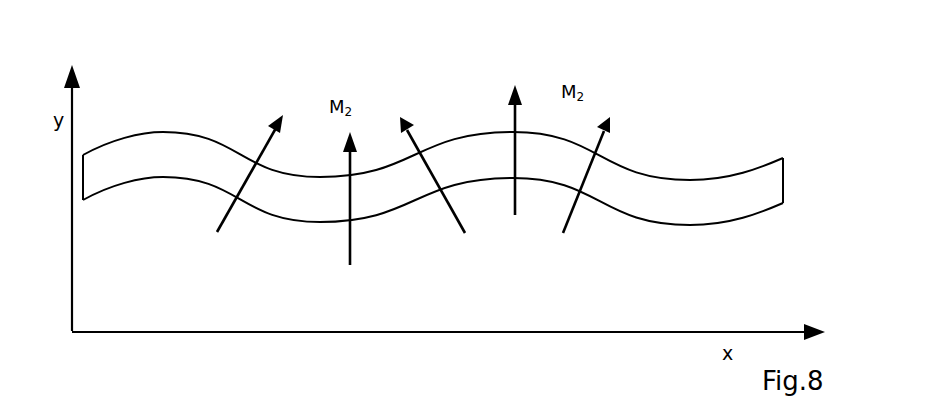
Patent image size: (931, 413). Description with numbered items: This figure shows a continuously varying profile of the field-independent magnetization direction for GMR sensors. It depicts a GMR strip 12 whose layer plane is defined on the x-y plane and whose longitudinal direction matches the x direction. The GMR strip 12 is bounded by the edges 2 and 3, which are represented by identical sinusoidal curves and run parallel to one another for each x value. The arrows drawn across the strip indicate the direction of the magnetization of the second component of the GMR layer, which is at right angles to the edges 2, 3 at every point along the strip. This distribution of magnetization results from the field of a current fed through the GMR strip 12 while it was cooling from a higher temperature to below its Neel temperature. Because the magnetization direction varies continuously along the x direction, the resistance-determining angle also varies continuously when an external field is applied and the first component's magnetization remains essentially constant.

The edge 2 is at (712, 183).
The edge 3 is at (712, 233).
The GMR strip 12 is at (433, 191).